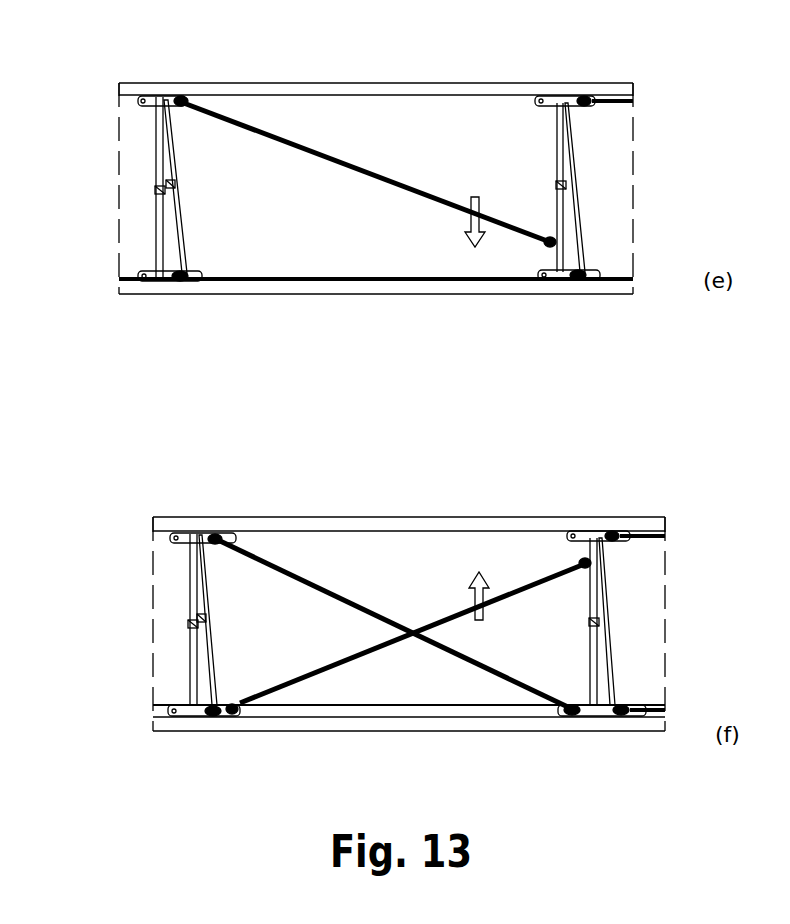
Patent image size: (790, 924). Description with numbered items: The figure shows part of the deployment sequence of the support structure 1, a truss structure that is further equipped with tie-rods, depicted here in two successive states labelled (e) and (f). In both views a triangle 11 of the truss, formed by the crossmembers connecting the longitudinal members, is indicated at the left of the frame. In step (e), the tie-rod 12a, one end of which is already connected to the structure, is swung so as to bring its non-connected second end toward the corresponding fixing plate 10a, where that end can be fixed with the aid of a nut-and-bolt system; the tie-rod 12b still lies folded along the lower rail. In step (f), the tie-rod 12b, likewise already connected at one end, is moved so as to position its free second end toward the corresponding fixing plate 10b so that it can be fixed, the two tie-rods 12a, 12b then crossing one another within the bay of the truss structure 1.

The support structure 1 is at (392, 365).
The triangle 11 is at (125, 229).
The tie-rod 12a is at (342, 163).
The tie-rod 12b is at (288, 272).
The fixing plate 10a is at (552, 278).
The fixing plate 10b is at (582, 533).